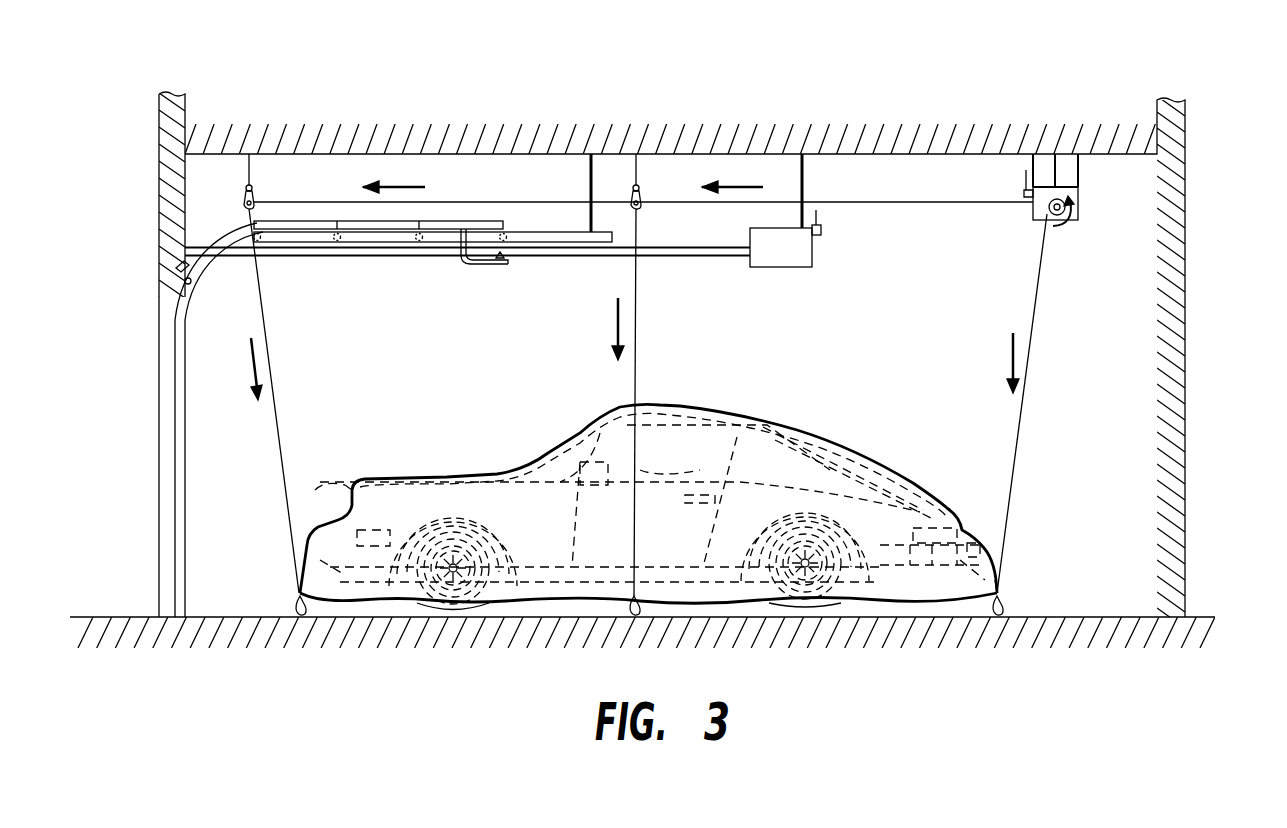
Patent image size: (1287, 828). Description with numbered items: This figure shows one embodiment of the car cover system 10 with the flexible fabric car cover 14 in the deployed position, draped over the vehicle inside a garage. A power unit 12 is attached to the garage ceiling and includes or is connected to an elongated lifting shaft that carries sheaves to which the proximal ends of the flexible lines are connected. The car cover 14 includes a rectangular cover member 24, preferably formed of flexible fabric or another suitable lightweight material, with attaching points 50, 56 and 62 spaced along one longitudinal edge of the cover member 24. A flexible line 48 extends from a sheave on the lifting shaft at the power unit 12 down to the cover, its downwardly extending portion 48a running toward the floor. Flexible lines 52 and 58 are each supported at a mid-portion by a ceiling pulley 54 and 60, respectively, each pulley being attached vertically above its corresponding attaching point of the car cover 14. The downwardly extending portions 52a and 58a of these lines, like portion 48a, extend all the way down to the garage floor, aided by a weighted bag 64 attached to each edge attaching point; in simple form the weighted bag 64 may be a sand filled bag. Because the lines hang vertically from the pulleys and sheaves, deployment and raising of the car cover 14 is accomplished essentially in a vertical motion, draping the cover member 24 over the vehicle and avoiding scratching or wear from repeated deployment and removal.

The car cover system 10 is at (708, 108).
The power unit 12 is at (1082, 195).
The flexible fabric car cover 14 is at (803, 424).
The cover member 24 is at (862, 452).
The flexible line 48 is at (1048, 208).
The downwardly extending portion of flexible line 48a is at (1034, 304).
The attaching point 50 is at (1000, 592).
The flexible line 52 is at (893, 203).
The downwardly extending portion of flexible line 52a is at (636, 323).
The ceiling pulley 54 is at (641, 204).
The attaching point 56 is at (636, 593).
The flexible line 58 is at (458, 202).
The downwardly extending portion of flexible line 58a is at (278, 414).
The ceiling pulley 60 is at (254, 203).
The attaching point 62 is at (298, 595).
The weighted bag 64 is at (1003, 606).